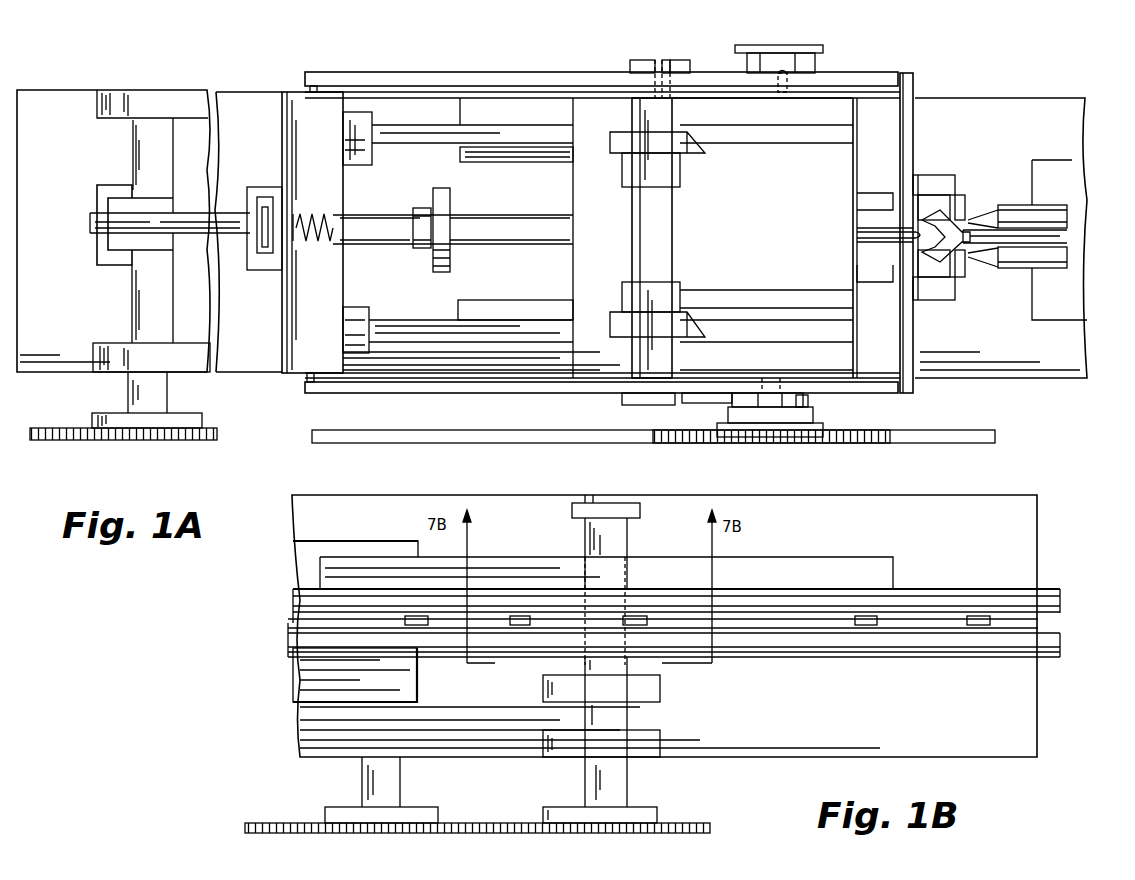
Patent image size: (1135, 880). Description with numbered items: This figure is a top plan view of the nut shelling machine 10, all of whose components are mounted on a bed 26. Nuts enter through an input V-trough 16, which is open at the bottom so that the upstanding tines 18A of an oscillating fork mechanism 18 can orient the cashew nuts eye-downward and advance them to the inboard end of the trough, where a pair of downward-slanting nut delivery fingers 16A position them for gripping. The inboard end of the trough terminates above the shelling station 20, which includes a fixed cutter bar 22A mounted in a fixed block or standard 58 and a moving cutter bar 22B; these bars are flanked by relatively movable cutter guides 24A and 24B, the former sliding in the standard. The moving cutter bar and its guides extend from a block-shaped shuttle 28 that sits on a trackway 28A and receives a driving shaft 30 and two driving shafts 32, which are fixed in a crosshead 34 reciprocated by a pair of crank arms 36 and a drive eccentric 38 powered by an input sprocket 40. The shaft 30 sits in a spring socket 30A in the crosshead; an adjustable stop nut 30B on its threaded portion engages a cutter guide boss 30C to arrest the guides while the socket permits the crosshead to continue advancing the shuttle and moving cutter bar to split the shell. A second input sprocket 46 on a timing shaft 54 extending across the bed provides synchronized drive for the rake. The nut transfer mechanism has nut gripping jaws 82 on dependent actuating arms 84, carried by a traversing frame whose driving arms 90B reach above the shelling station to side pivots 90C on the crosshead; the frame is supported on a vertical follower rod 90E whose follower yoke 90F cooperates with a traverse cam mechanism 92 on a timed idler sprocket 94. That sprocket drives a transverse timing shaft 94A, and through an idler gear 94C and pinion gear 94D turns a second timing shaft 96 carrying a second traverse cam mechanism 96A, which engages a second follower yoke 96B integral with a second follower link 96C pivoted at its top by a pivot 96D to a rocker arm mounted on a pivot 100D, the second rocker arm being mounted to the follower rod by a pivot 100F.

In FIG. 1A, the shelling machine 10 is at (968, 45).
In FIG. 1B, the input V-trough 16 is at (945, 643).
In FIG. 1A, the nut delivery fingers 16A is at (1000, 225).
In FIG. 1B, the oscillating fork mechanism 18 is at (945, 618).
In FIG. 1B, the upstanding tines 18A is at (525, 617).
In FIG. 1A, the shelling station 20 is at (970, 183).
In FIG. 1A, the fixed cutter bar 22A is at (968, 245).
In FIG. 1A, the moving cutter bar 22B is at (920, 236).
In FIG. 1A, the cutter guides 24A is at (972, 218).
In FIG. 1A, the cutter guides 24B is at (870, 200).
In FIG. 1A, the bed 26 is at (253, 161).
In FIG. 1A, the shuttle 28 is at (763, 271).
In FIG. 1A, the trackway 28A is at (460, 152).
In FIG. 1A, the driving shaft 30 is at (535, 226).
In FIG. 1A, the spring socket 30A is at (320, 208).
In FIG. 1A, the adjustable stop nut 30B is at (415, 244).
In FIG. 1A, the cutter guide boss 30C is at (448, 230).
In FIG. 1A, the driving shafts 32 is at (404, 134).
In FIG. 1A, the crosshead 34 is at (318, 161).
In FIG. 1A, the crank arms 36 is at (152, 212).
In FIG. 1A, the drive eccentric 38 is at (98, 250).
In FIG. 1A, the input sprocket 40 is at (100, 440).
In FIG. 1B, the second input sprocket 46 is at (625, 834).
In FIG. 1B, the timing shaft 54 is at (608, 500).
In FIG. 1A, the fixed block or standard 58 is at (1057, 313).
In FIG. 1B, the fixed block or standard 58 is at (390, 673).
In FIG. 1A, the nut gripping jaws 82 is at (952, 300).
In FIG. 1A, the actuating arms 84 is at (926, 302).
In FIG. 1A, the driving arms 90B is at (440, 70).
In FIG. 1A, the side pivots 90C is at (310, 88).
In FIG. 1A, the vertical follower rod 90E is at (770, 393).
In FIG. 1A, the follower yoke 90F is at (805, 400).
In FIG. 1A, the traverse cam mechanism 92 is at (765, 425).
In FIG. 1A, the timed idler sprocket 94 is at (870, 445).
In FIG. 1A, the timing shaft 94A is at (783, 47).
In FIG. 1A, the idler gear 94C is at (707, 404).
In FIG. 1A, the pinion gear 94D is at (630, 400).
In FIG. 1A, the timing shaft 96 is at (650, 352).
In FIG. 1A, the second traverse cam mechanism 96A is at (636, 60).
In FIG. 1A, the second follower yoke 96B is at (688, 60).
In FIG. 1A, the second follower link 96C is at (668, 60).
In FIG. 1A, the pivot 96D is at (657, 60).
In FIG. 1A, the pivot 100D is at (787, 92).
In FIG. 1A, the pivot 100F is at (790, 385).